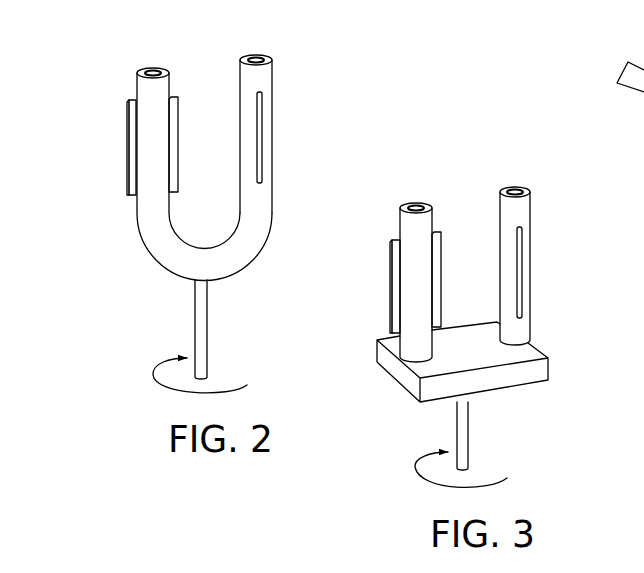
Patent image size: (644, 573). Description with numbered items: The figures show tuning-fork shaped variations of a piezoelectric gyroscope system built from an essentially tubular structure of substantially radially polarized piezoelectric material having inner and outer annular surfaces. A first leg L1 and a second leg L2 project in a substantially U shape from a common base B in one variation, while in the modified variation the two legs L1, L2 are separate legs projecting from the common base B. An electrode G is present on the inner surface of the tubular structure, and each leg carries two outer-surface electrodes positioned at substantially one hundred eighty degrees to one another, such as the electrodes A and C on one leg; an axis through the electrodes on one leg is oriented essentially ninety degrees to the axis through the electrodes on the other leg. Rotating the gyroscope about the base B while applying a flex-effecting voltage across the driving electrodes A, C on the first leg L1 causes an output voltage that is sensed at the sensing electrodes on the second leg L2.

In FIG. 2, the first leg L1 is at (122, 84).
In FIG. 3, the first leg L1 is at (386, 221).
In FIG. 2, the second leg L2 is at (294, 69).
In FIG. 3, the second leg L2 is at (554, 203).
In FIG. 2, the electrode G is at (252, 45).
In FIG. 3, the electrode G is at (516, 184).
In FIG. 2, the electrode A is at (124, 134).
In FIG. 3, the electrode A is at (387, 269).
In FIG. 2, the base B is at (181, 129).
In FIG. 3, the base B is at (448, 260).
In FIG. 2, the electrode C is at (264, 137).
In FIG. 3, the electrode C is at (531, 269).